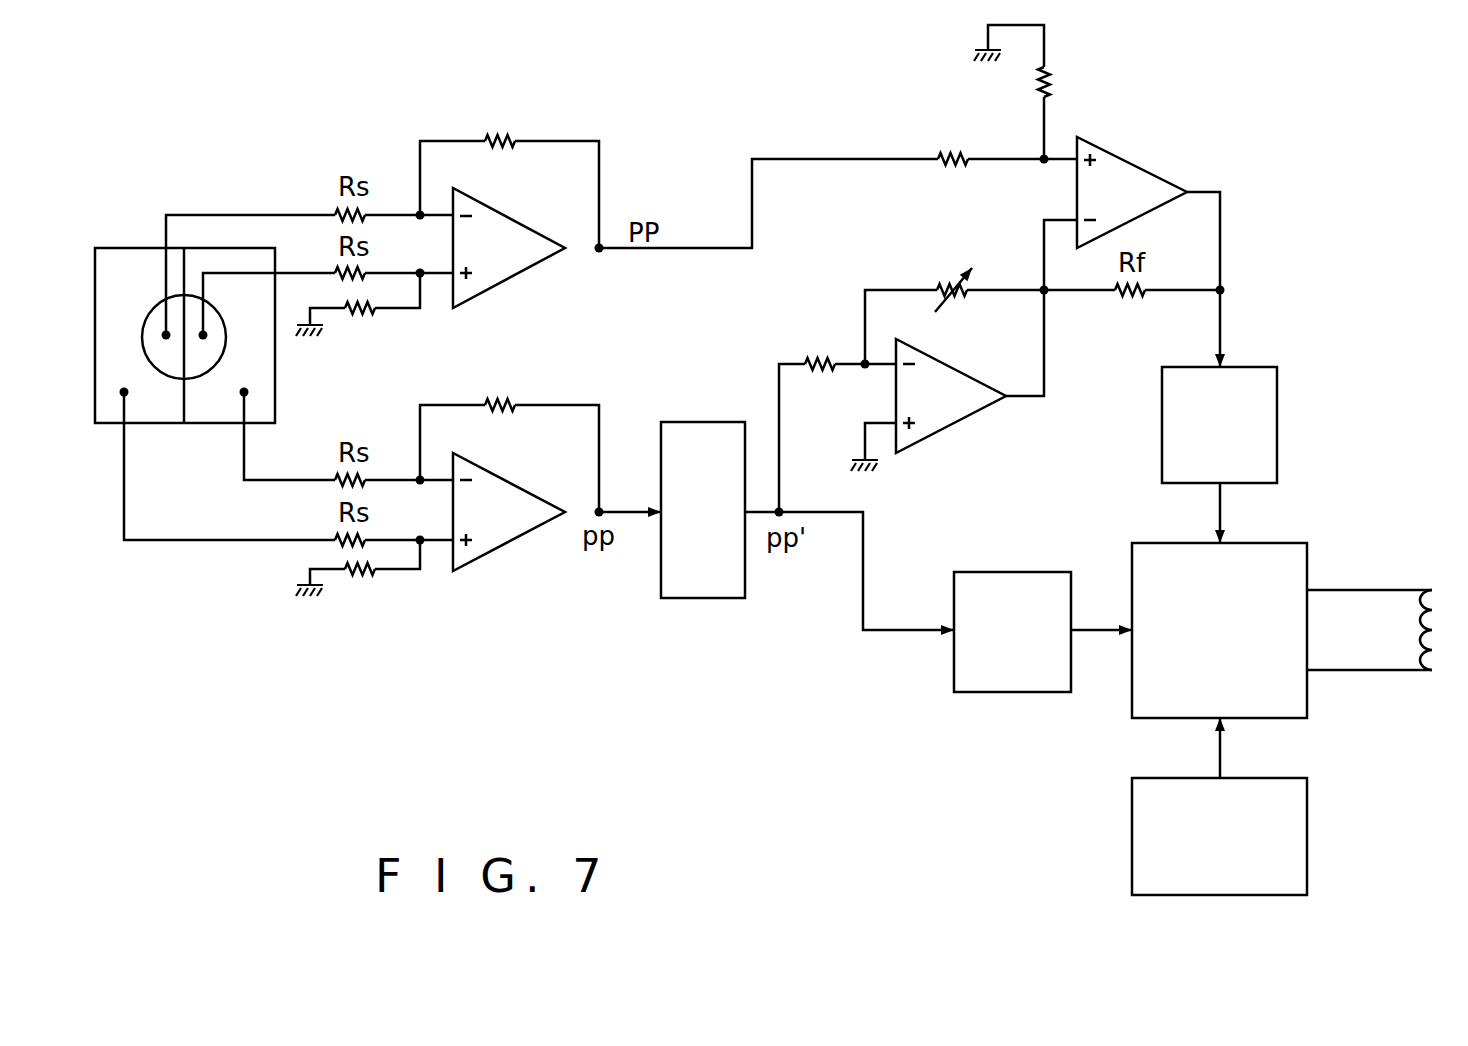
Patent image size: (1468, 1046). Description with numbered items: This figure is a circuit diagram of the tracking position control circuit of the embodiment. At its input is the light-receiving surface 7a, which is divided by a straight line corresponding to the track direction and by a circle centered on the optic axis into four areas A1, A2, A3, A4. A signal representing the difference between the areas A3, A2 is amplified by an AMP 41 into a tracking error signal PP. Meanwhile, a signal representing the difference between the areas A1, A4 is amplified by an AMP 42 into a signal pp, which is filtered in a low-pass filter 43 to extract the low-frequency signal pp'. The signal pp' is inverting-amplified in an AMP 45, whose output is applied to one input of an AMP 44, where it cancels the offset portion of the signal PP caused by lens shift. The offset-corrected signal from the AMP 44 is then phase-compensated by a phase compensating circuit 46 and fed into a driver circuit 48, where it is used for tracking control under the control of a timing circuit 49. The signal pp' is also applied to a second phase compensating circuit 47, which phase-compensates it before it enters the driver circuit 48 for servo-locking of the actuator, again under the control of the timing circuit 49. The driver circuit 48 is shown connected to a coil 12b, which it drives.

The light-receiving surface 7a is at (107, 248).
The area A1 is at (140, 255).
The area A2 is at (155, 350).
The area A3 is at (218, 345).
The area A4 is at (265, 399).
The AMP 41 is at (512, 224).
The AMP 42 is at (515, 486).
The low-pass filter 43 is at (701, 426).
The AMP 44 is at (1156, 172).
The AMP 45 is at (975, 372).
The phase compensating circuit 46 is at (1254, 370).
The phase compensating circuit 47 is at (1013, 574).
The driver circuit 48 is at (1307, 550).
The timing circuit 49 is at (1132, 803).
The tracking coil 12b is at (1432, 590).